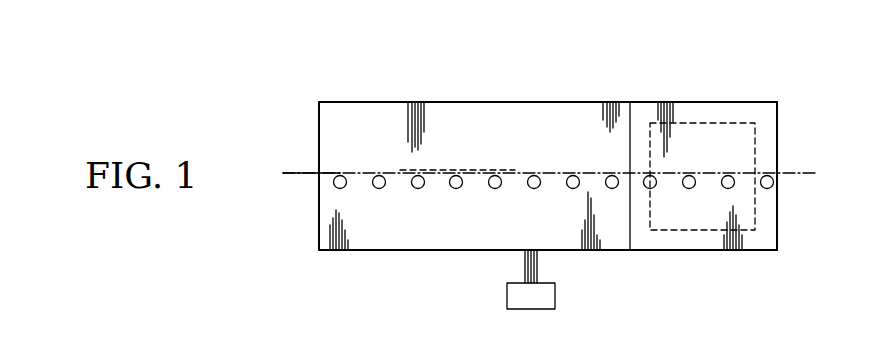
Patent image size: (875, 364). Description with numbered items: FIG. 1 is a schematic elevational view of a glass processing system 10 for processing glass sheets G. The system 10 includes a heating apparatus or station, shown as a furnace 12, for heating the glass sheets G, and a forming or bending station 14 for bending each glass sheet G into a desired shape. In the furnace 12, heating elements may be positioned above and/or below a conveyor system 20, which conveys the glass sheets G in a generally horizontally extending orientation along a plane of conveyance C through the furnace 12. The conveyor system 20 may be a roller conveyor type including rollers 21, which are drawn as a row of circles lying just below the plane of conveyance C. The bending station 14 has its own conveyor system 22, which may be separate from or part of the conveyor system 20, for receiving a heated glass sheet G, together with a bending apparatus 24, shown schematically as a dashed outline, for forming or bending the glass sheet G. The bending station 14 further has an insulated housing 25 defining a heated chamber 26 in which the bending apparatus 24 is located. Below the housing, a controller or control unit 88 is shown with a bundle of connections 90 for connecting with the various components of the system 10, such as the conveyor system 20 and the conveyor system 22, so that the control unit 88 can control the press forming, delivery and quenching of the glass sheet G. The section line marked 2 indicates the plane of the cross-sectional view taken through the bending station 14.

The glass processing system 10 is at (538, 72).
The furnace 12 is at (388, 90).
The bending station 14 is at (740, 84).
The conveyor system 20 is at (322, 181).
The rollers 21 is at (495, 189).
The conveyor system 22 is at (770, 200).
The bending apparatus 24 is at (537, 124).
The insulated housing 25 is at (762, 100).
The heated chamber 26 is at (768, 140).
The control unit 88 is at (556, 297).
The bundle of connections 90 is at (525, 262).
The plane of conveyance C is at (358, 172).
The glass sheet G is at (405, 168).
The section line 2- 2 is at (652, 49).